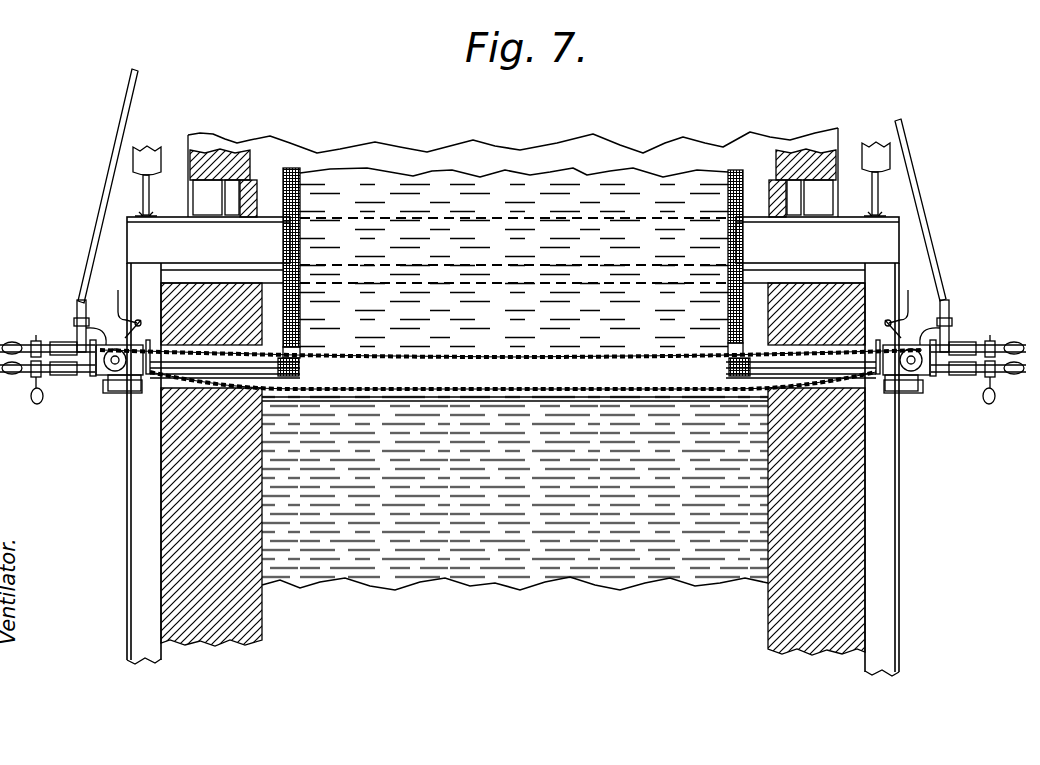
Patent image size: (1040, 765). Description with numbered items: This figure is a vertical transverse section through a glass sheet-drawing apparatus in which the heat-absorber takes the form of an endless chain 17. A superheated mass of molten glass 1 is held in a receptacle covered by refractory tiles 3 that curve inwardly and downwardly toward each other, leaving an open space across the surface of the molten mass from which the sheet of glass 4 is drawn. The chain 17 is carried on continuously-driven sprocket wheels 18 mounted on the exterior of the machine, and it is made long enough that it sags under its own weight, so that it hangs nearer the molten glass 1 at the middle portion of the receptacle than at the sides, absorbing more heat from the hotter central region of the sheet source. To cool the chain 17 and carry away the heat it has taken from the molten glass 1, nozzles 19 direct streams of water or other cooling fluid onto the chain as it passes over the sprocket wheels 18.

The mass of molten glass 1 is at (503, 580).
The tiles 3 is at (512, 263).
The sheet of glass 4 is at (577, 172).
The endless chain 17 is at (672, 343).
The sprocket wheels 18 is at (110, 375).
The nozzles 19 is at (122, 338).